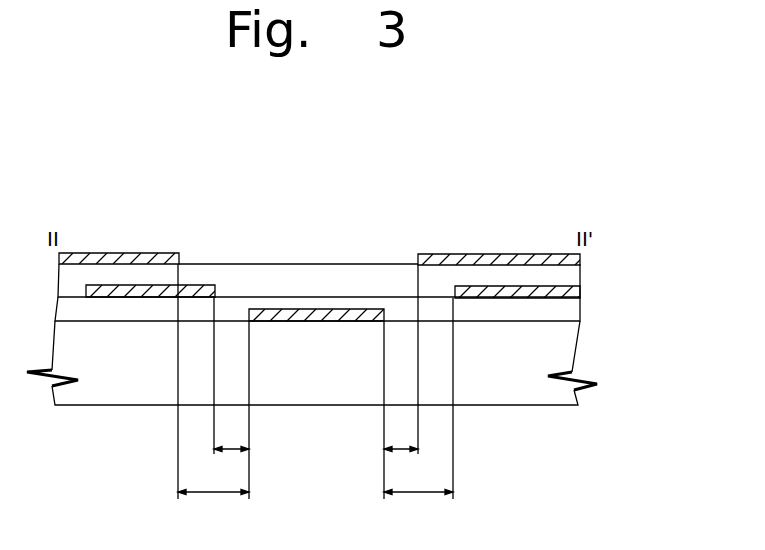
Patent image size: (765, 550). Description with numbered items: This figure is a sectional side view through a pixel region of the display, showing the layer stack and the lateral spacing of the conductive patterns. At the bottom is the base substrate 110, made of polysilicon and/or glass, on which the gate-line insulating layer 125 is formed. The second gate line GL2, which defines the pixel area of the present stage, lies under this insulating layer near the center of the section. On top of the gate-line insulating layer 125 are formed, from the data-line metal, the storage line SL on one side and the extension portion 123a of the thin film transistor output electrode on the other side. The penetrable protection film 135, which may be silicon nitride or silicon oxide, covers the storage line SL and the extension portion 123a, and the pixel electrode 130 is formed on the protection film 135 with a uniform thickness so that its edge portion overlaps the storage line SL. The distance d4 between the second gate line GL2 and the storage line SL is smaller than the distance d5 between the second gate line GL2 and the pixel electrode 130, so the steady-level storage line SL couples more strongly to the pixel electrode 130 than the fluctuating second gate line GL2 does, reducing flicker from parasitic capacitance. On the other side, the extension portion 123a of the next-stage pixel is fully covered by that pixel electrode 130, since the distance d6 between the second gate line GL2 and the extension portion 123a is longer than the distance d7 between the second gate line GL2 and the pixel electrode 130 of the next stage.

The base substrate 110 is at (559, 350).
The gate-line insulating layer 125 is at (562, 313).
The penetrable protection film 135 is at (567, 282).
The pixel electrode 130 is at (571, 256).
The storage line SL is at (135, 290).
The second gate line GL2 is at (292, 317).
The extension portion 123a is at (489, 290).
The distance d4 is at (231, 398).
The distance d5 is at (213, 381).
The distance d6 is at (418, 398).
The distance d7 is at (401, 382).